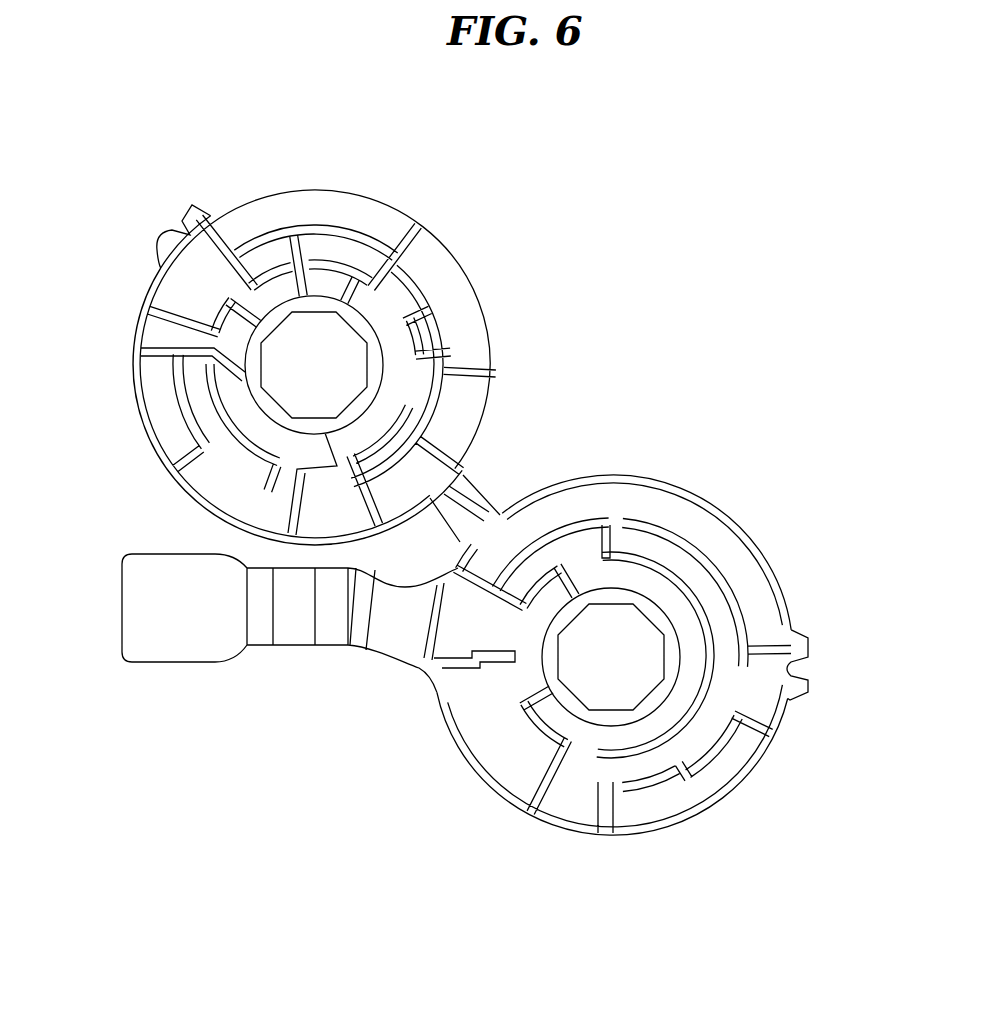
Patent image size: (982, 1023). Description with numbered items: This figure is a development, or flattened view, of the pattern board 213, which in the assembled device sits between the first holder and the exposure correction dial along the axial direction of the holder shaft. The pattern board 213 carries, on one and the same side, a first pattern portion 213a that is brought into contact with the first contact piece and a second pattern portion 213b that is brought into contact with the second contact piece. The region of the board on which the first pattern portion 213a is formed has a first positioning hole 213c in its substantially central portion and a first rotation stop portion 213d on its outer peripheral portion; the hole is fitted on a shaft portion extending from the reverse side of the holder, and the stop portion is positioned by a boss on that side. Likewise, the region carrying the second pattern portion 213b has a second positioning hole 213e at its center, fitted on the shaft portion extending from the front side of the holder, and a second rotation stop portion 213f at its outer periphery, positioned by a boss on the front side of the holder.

The pattern board 213 is at (640, 330).
The first pattern portion 213a is at (697, 524).
The second pattern portion 213b is at (432, 262).
The first positioning hole 213c is at (608, 603).
The first rotation stop portion 213d is at (802, 668).
The second positioning hole 213e is at (320, 308).
The second rotation stop portion 213f is at (180, 227).